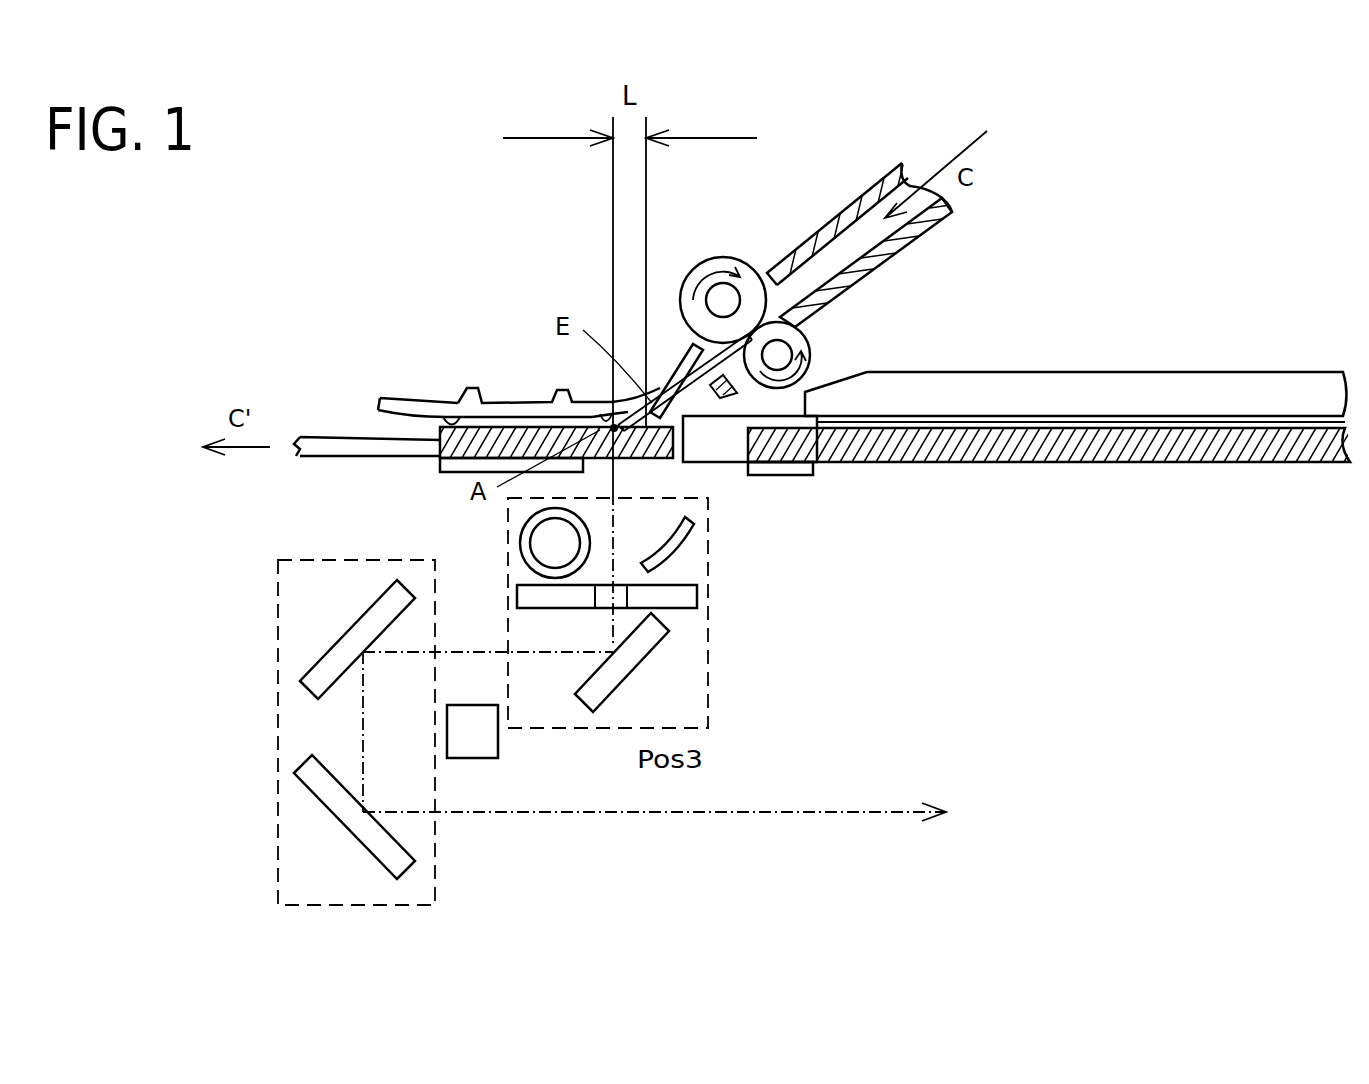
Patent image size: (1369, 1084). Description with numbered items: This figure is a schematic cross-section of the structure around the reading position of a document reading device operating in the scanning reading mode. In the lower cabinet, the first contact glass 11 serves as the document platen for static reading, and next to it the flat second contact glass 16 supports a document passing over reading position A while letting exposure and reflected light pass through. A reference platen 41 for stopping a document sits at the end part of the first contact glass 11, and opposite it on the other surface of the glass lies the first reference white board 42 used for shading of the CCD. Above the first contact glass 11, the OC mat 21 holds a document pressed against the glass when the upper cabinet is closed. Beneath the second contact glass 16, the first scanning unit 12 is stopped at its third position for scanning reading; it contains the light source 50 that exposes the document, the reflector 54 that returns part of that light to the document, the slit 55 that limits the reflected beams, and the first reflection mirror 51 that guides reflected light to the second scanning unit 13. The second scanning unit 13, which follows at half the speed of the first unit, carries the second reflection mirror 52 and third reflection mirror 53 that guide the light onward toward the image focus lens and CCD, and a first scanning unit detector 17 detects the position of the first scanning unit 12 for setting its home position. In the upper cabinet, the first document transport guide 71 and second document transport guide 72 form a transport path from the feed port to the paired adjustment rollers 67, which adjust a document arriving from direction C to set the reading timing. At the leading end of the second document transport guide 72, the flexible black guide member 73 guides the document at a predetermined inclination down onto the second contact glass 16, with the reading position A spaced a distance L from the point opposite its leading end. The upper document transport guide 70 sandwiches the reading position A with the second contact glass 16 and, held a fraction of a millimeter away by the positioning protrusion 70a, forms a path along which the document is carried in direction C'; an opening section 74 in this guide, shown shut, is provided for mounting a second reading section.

The first contact glass 11 is at (1232, 462).
The first scanning unit 12 is at (560, 738).
The second scanning unit 13 is at (337, 905).
The second contact glass 16 is at (673, 458).
The first scanning unit detector 17 is at (464, 758).
The OC mat 21 is at (1232, 378).
The reference platen 41 is at (818, 421).
The first reference white board 42 is at (798, 475).
The light source 50 is at (537, 538).
The first reflection mirror 51 is at (655, 650).
The second reflection mirror 52 is at (335, 639).
The third reflection mirror 53 is at (310, 760).
The reflector 54 is at (677, 553).
The slit 55 is at (622, 597).
The paired adjustment rollers 67 is at (719, 264).
The upper document transport guide 70 is at (388, 395).
The positioning protrusion 70a is at (454, 415).
The first document transport guide 71 is at (856, 212).
The second document transport guide 72 is at (889, 258).
The guide member 73 is at (700, 390).
The opening section 74 is at (520, 400).